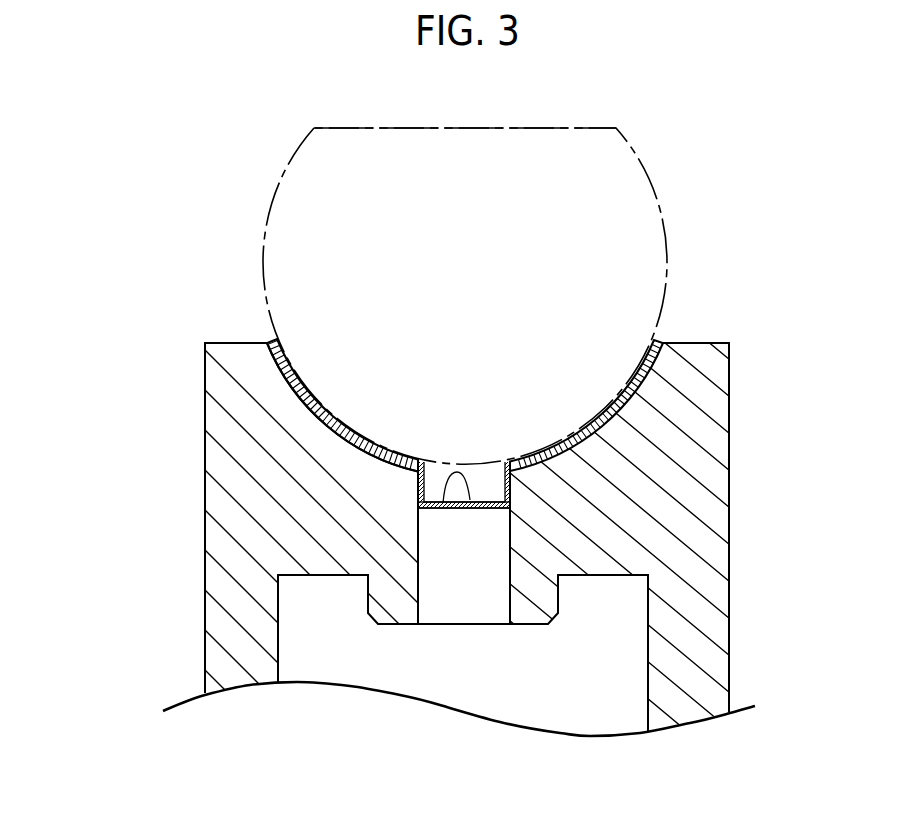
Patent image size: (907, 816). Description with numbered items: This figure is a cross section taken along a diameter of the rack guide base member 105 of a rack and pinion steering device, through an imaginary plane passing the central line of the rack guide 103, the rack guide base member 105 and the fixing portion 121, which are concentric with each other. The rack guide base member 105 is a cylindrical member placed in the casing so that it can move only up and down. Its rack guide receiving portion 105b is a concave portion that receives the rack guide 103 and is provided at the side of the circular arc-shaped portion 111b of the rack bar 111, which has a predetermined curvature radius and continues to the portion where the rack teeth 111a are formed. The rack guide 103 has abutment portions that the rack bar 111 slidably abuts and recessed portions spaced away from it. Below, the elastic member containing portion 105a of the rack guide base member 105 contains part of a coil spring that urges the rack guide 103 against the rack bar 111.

The rack guide 103 is at (640, 367).
The rack guide base member 105 is at (680, 473).
The elastic member containing portion 105a is at (648, 683).
The rack guide receiving portion 105b is at (338, 418).
The rack bar 111 is at (660, 205).
The rack teeth 111a is at (568, 128).
The circular arc-shaped portion 111b is at (491, 462).
The fixing portion 121 is at (443, 503).